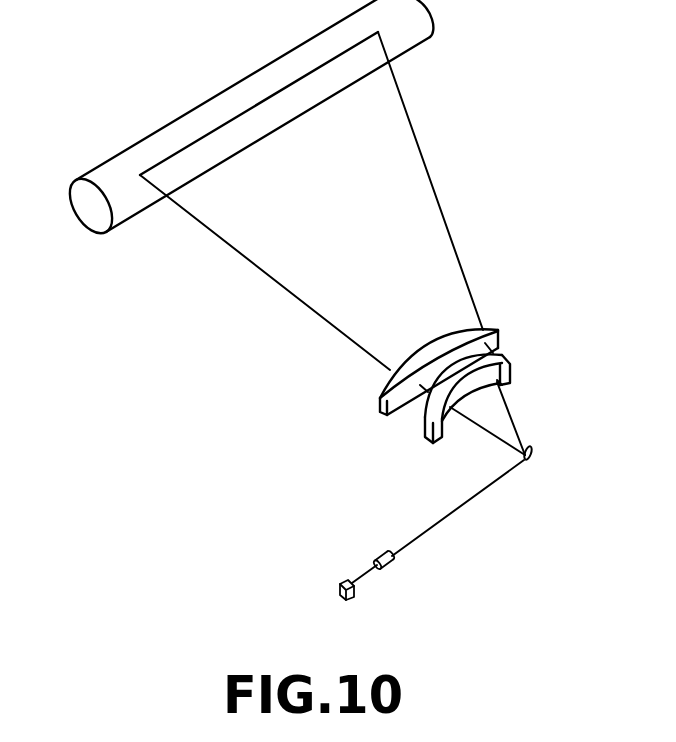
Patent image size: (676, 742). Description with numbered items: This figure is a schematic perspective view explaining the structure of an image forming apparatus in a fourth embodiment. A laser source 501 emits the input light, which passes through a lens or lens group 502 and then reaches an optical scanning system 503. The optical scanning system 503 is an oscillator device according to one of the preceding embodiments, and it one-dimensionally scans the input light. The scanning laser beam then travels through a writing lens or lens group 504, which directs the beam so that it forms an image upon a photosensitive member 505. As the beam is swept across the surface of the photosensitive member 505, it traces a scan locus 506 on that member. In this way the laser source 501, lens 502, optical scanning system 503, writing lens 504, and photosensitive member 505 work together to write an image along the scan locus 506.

The laser source 501 is at (347, 600).
The lens or lens group 502 is at (392, 565).
The optical scanning system 503 is at (535, 450).
The writing lens or lens group 504 is at (545, 303).
The photosensitive member 505 is at (397, 32).
The scan locus 506 is at (196, 142).